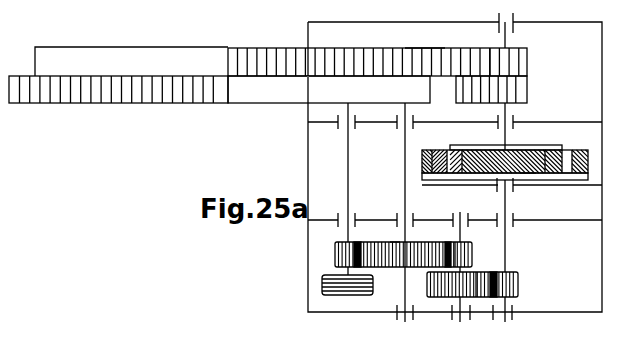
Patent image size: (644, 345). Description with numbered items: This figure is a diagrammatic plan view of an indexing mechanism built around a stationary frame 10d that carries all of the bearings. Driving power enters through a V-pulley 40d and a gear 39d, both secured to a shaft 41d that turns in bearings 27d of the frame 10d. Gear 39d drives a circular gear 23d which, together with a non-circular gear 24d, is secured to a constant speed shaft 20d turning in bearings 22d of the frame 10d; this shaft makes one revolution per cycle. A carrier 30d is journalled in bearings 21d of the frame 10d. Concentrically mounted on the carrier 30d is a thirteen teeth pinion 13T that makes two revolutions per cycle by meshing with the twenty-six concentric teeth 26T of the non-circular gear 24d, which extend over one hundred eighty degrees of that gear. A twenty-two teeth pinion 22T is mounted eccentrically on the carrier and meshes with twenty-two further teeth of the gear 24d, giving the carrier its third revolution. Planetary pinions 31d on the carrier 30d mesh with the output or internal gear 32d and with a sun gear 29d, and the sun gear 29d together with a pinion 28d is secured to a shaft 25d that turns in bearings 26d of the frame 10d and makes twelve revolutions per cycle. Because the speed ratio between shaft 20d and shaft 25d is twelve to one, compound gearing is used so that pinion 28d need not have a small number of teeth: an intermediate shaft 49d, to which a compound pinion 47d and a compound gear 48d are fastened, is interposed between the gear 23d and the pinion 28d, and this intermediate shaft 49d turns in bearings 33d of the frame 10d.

The frame 10d is at (308, 138).
The non-circular gear 24d is at (209, 47).
The twenty-six concentric teeth 26T is at (409, 46).
The thirteen teeth pinion 13T is at (528, 62).
The twenty-two teeth pinion 22T is at (173, 105).
The bearings 21d is at (513, 22).
The shaft 25d is at (506, 240).
The bearings 26d is at (514, 220).
The shaft 41d is at (346, 161).
The bearings 27d is at (338, 124).
The constant speed shaft 20d is at (405, 158).
The bearings 22d is at (397, 124).
The intermediate shaft 49d is at (460, 234).
The bearings 33d is at (452, 220).
The carrier 30d is at (505, 149).
The planetary pinions 31d is at (432, 150).
The output or internal gear 32d is at (422, 179).
The sun gear 29d is at (528, 177).
The gear 39d is at (335, 252).
The circular gear 23d is at (395, 242).
The compound pinion 47d is at (473, 254).
The V-pulley 40d is at (322, 290).
The pinion 28d is at (519, 283).
The compound gear 48d is at (482, 297).